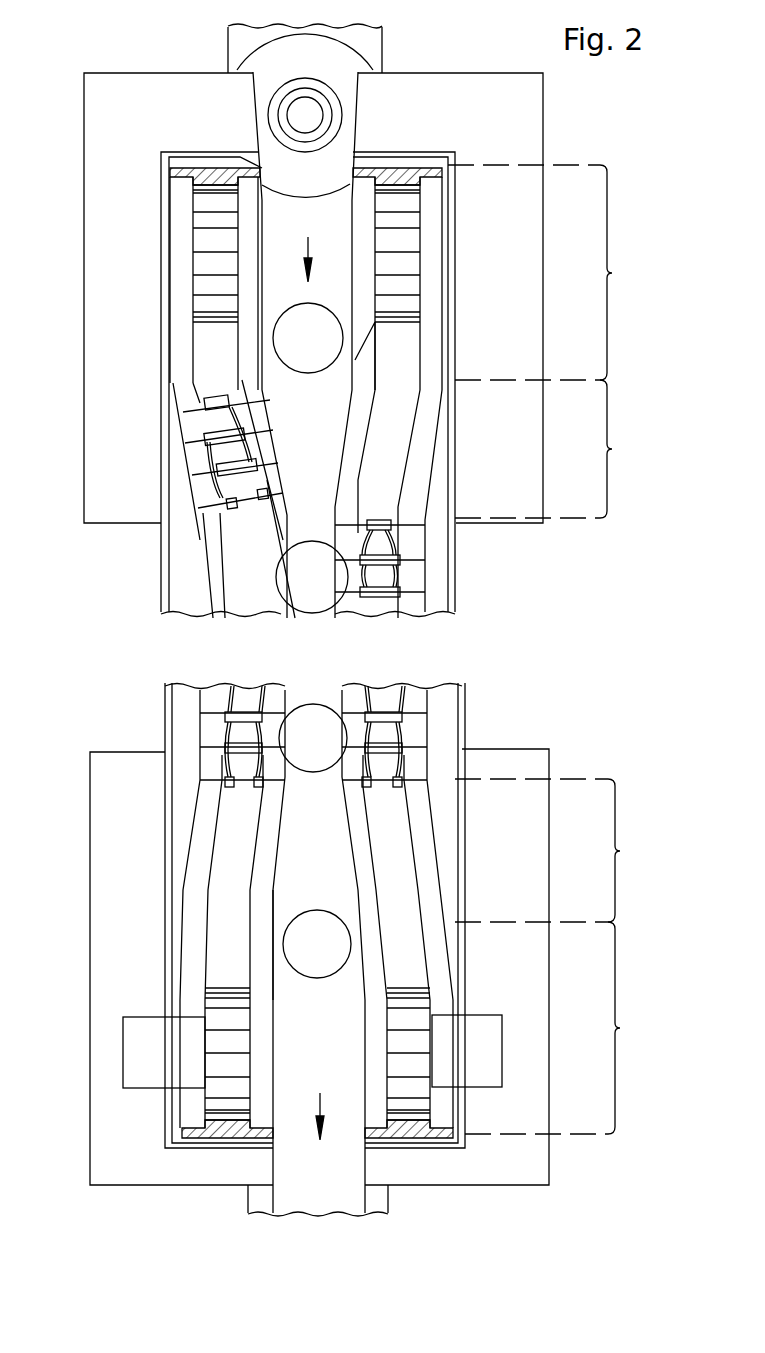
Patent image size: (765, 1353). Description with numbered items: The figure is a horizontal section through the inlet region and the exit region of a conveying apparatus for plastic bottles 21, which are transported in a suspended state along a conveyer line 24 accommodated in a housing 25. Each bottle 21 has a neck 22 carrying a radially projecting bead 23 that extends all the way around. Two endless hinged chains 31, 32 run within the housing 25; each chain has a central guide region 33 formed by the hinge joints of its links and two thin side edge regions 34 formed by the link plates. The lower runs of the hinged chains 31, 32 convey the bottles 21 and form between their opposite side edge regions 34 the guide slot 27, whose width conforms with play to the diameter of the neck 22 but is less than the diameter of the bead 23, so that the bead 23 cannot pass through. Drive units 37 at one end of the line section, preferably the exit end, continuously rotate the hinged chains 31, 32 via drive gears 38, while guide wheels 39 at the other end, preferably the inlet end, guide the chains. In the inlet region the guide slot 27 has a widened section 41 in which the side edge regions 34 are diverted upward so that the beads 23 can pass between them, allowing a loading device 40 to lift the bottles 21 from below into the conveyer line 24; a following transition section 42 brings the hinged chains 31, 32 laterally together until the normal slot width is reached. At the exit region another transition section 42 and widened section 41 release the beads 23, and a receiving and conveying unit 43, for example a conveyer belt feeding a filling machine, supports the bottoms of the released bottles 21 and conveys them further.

The bottle 21 is at (288, 70).
The neck 22 is at (320, 98).
The bead 23 is at (337, 110).
The conveyer line 24 is at (491, 629).
The housing 25 is at (162, 337).
The guide slot 27 is at (318, 532).
The hinged chain 31 is at (201, 414).
The hinged chain 32 is at (413, 577).
The central guide region 33 is at (240, 610).
The side edge region 34 is at (262, 452).
The drive unit 37 is at (153, 1047).
The drive gear 38 is at (410, 1020).
The guide wheel 39 is at (207, 237).
The loading device 40 is at (250, 42).
The widened section 41 is at (548, 649).
The transition section 42 is at (552, 651).
The receiving and conveying unit 43 is at (368, 1197).